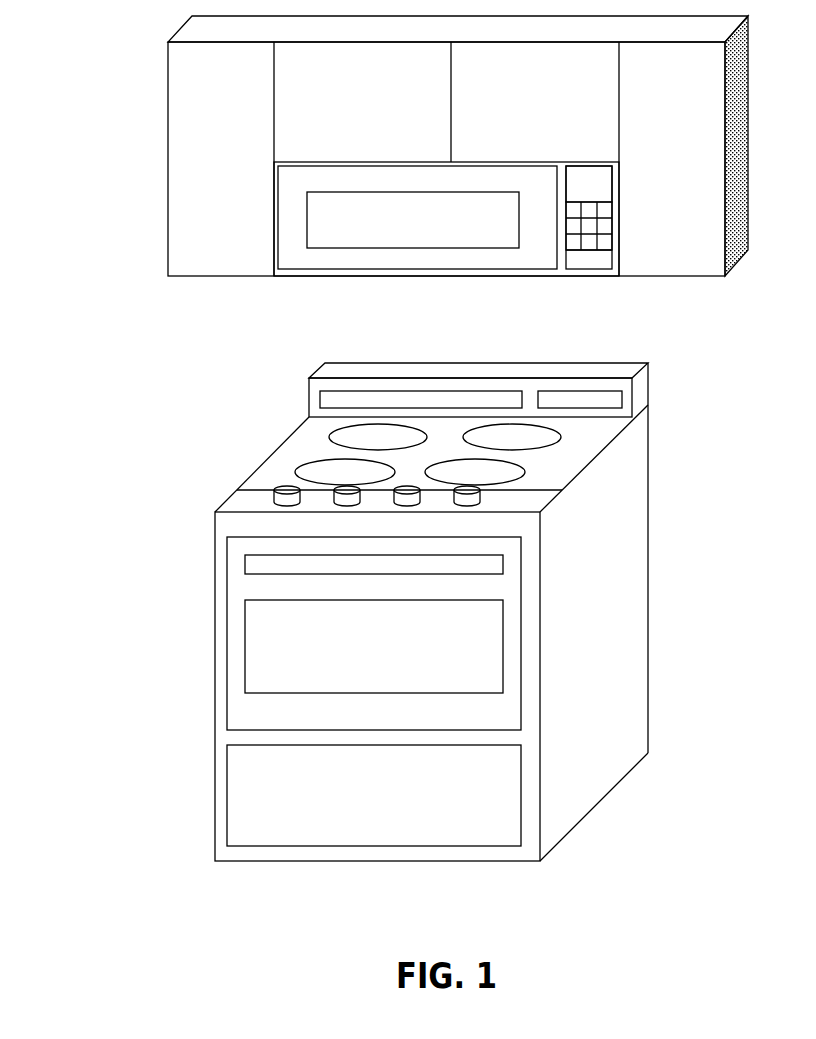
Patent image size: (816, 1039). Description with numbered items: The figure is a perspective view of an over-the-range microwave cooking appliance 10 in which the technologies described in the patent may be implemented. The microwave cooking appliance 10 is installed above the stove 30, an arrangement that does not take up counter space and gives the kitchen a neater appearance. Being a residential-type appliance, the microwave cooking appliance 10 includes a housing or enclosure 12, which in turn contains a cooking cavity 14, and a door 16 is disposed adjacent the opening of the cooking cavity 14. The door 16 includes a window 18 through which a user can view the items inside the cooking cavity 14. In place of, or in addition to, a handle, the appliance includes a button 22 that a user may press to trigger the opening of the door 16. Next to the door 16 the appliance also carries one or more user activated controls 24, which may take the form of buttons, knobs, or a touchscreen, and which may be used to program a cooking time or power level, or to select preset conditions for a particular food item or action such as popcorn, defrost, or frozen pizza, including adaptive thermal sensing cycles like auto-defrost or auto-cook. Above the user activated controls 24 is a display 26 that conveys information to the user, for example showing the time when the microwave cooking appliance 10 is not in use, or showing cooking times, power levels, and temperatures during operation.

The over-the-range microwave cooking appliance 10 is at (143, 157).
The housing or enclosure 12 is at (297, 273).
The cooking cavity 14 is at (435, 230).
The door 16 is at (532, 258).
The window 18 is at (320, 215).
The button 22 is at (597, 258).
The user activated controls 24 is at (602, 222).
The display 26 is at (580, 180).
The stove 30 is at (183, 472).